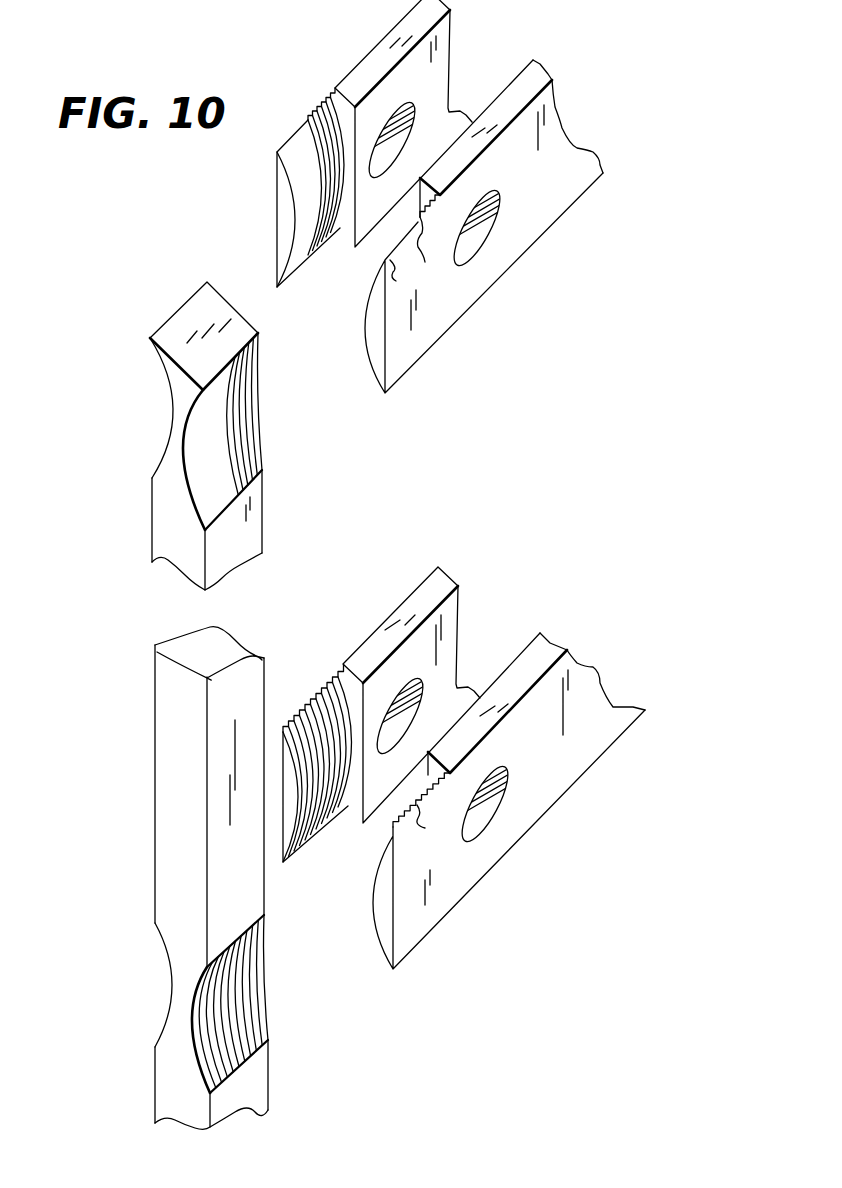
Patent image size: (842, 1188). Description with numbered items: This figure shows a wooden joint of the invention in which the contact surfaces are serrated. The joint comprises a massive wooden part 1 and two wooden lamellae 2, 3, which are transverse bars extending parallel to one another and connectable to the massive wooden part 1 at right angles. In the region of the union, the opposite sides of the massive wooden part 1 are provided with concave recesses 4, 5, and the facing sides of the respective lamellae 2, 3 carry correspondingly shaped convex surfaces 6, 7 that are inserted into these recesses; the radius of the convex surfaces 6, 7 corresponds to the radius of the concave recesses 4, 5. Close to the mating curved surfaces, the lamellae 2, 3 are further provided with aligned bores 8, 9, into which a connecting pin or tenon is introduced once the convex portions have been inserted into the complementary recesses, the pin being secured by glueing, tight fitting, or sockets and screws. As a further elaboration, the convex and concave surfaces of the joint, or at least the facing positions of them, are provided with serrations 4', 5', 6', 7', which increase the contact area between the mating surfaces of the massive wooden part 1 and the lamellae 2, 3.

The massive wooden part 1 is at (187, 320).
The wooden lamella 2 is at (372, 50).
The wooden lamella 3 is at (530, 83).
The concave recess 4 is at (117, 408).
The serrations 4' is at (111, 985).
The concave recess 5 is at (267, 460).
The serrations 5' is at (268, 713).
The convex surface 6 is at (286, 187).
The serrations 6' is at (298, 482).
The convex surface 7 is at (467, 571).
The serrations 7' is at (421, 519).
The bore 8 is at (405, 115).
The bore 9 is at (478, 242).